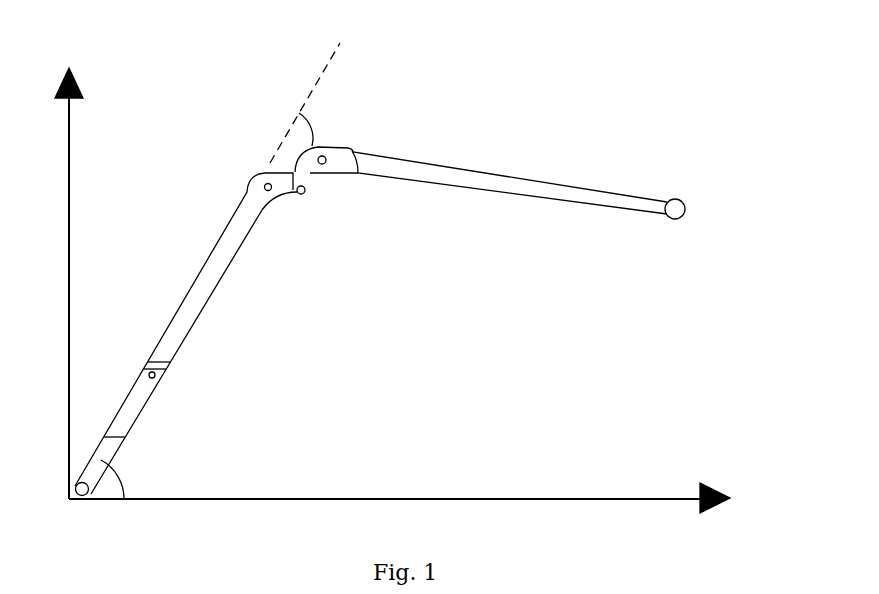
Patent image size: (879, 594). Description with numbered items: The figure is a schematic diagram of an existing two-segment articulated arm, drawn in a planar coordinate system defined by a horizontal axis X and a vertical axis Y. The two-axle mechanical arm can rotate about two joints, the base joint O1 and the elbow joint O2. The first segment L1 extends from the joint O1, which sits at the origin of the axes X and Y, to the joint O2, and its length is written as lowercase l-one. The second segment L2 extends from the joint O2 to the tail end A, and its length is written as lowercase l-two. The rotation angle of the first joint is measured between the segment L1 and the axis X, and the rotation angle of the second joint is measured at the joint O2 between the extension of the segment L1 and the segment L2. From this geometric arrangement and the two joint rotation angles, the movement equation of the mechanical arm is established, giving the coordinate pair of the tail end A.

The first arm segment L1 is at (190, 333).
The second arm segment L2 is at (481, 165).
The first joint O1 is at (55, 503).
The second joint O2 is at (319, 195).
The tail end A is at (718, 201).
The X axis X is at (414, 498).
The Y axis Y is at (65, 257).